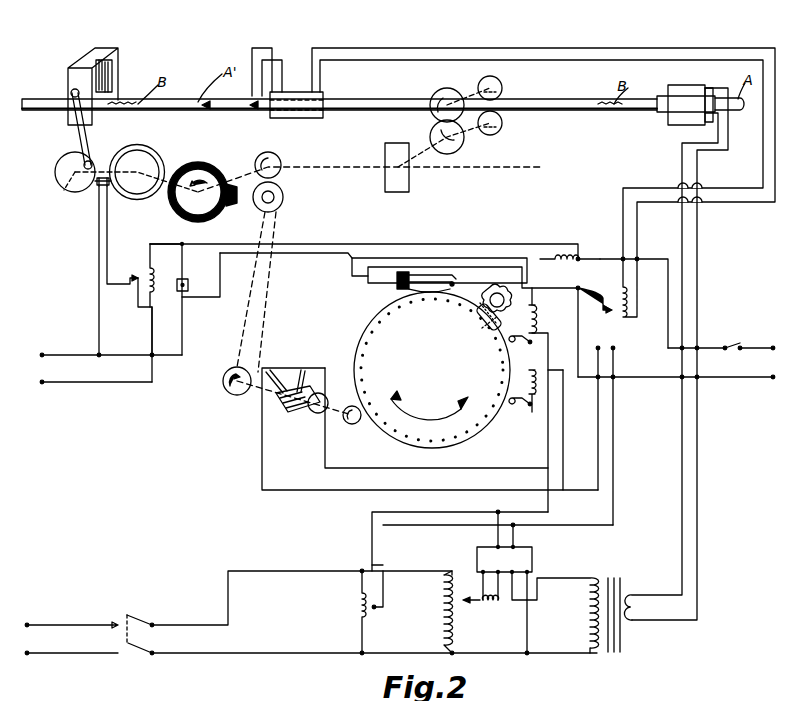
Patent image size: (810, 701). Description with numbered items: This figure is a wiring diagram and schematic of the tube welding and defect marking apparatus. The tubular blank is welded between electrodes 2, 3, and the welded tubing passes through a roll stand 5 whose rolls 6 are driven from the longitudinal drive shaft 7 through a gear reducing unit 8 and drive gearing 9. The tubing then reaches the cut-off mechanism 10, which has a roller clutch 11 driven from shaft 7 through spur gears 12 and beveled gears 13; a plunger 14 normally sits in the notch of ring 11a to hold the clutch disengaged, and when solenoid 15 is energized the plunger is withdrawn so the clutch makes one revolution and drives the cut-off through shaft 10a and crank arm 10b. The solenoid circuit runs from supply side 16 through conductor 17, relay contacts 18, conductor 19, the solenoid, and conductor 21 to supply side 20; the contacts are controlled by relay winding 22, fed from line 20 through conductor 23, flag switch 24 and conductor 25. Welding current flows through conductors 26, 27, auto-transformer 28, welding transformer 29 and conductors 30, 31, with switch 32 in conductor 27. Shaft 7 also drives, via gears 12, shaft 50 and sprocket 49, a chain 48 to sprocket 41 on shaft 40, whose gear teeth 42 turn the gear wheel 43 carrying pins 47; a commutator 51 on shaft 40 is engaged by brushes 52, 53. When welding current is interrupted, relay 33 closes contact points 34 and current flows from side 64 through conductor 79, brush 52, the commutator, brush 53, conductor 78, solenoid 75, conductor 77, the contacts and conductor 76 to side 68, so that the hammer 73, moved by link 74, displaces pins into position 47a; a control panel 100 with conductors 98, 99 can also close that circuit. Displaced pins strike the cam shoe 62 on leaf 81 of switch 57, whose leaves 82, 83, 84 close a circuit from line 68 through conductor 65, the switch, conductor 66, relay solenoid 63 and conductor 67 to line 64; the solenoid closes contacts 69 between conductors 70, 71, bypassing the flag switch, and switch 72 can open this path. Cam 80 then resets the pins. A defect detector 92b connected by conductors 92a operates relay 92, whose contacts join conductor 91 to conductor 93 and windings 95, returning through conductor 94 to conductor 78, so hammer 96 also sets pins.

The electrode 2 is at (688, 98).
The electrode 3 is at (690, 112).
The roll stand 5 is at (732, 345).
The rolls 6 is at (503, 86).
The drive shaft 7 is at (472, 170).
The gear reducing unit 8 is at (385, 152).
The drive gearing 9 is at (430, 130).
The cut-off mechanism 10 is at (120, 53).
The shaft 10a is at (62, 193).
The crank arm 10b is at (88, 127).
The roller clutch 11 is at (148, 165).
The ring 11a is at (142, 146).
The spur gears 12 is at (282, 172).
The beveled gears 13 is at (220, 170).
The plunger 14 is at (108, 187).
The solenoid 15 is at (98, 184).
The side of power supply 16 is at (42, 383).
The conductor 17 is at (152, 334).
The relay contacts 18 is at (136, 275).
The conductor 19 is at (108, 236).
The side of supply line 20 is at (42, 354).
The conductor 21 is at (98, 270).
The relay winding 22 is at (148, 265).
The conductor 23 is at (183, 322).
The flag switch 24 is at (189, 284).
The conductor 25 is at (168, 237).
The conductor 26 is at (27, 655).
The conductor 27 is at (28, 624).
The auto-transformer 28 is at (437, 606).
The welding transformer 29 is at (586, 612).
The conductor 30 is at (682, 175).
The conductor 31 is at (702, 156).
The switch 32 is at (150, 622).
The relay 33 is at (358, 608).
The contact points 34 is at (383, 610).
The shaft 40 is at (350, 408).
The sprocket 41 is at (233, 396).
The gear teeth 42 is at (345, 421).
The gear wheel 43 is at (432, 370).
The pin 47 is at (355, 354).
The displaced position of pin 47a is at (430, 295).
The chain 48 is at (268, 284).
The sprocket 49 is at (284, 198).
The shaft 50 is at (239, 203).
The commutator 51 is at (288, 411).
The brush 52 is at (280, 370).
The brush 53 is at (304, 370).
The switch 57 is at (428, 272).
The cam shoe 62 is at (450, 290).
The relay solenoid 63 is at (584, 258).
The side of current supply 64 is at (773, 347).
The conductor 65 is at (370, 284).
The conductor 66 is at (352, 268).
The conductor 67 is at (654, 258).
The side of current supply 68 is at (773, 378).
The contacts 69 is at (577, 241).
The conductor 70 is at (428, 246).
The conductor 71 is at (318, 243).
The switch 72 is at (518, 240).
The hammer 73 is at (520, 404).
The link 74 is at (531, 406).
The solenoid 75 is at (530, 396).
The conductor 76 is at (615, 484).
The conductor 77 is at (564, 396).
The conductor 78 is at (514, 468).
The conductor 79 is at (565, 436).
The cam 80 is at (490, 330).
The leaf spring 81 is at (420, 291).
The leaf spring 82 is at (456, 284).
The leaf spring 83 is at (405, 291).
The leaf spring 84 is at (458, 274).
The conductor 91 is at (614, 362).
The relay 92 is at (628, 316).
The conductors 92a is at (530, 48).
The defect detector 92b is at (300, 118).
The conductor 93 is at (536, 302).
The conductor 94 is at (549, 338).
The windings of pin setting solenoid 95 is at (538, 326).
The hammer 96 is at (524, 341).
The conductor 98 is at (518, 541).
The conductor 99 is at (495, 541).
The control panel 100 is at (526, 563).